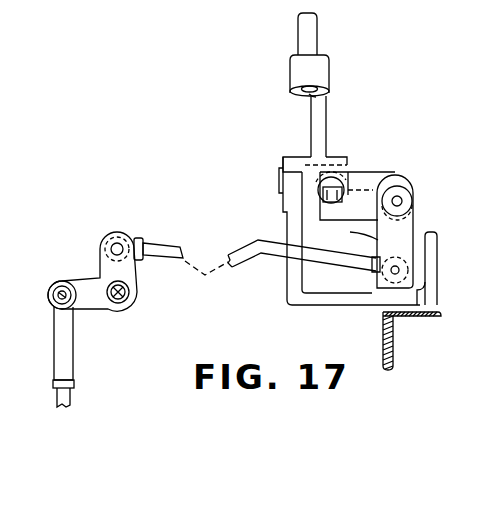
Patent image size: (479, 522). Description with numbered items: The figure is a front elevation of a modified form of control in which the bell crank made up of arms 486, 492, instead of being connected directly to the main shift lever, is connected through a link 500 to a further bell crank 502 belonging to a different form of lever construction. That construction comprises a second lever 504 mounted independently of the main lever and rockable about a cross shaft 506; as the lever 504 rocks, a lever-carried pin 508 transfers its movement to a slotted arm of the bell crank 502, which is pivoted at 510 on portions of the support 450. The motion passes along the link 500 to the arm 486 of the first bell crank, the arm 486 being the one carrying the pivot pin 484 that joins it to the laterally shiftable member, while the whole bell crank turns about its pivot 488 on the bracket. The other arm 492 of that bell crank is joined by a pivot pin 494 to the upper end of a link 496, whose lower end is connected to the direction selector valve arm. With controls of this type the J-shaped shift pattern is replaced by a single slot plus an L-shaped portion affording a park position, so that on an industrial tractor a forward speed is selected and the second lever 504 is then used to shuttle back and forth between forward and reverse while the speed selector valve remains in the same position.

The support 450 is at (393, 358).
The pivot pin 484 is at (121, 246).
The arm of bell crank 486 is at (134, 268).
The bell crank pivot 488 is at (130, 297).
The arm of bell crank 492 is at (100, 306).
The pivot pin 494 is at (60, 287).
The link 496 is at (73, 396).
The link 500 is at (338, 265).
The bell crank 502 is at (405, 226).
The second lever 504 is at (311, 33).
The cross shaft 506 is at (280, 182).
The lever-carried pin 508 is at (333, 198).
The bell crank pivot 510 is at (402, 200).